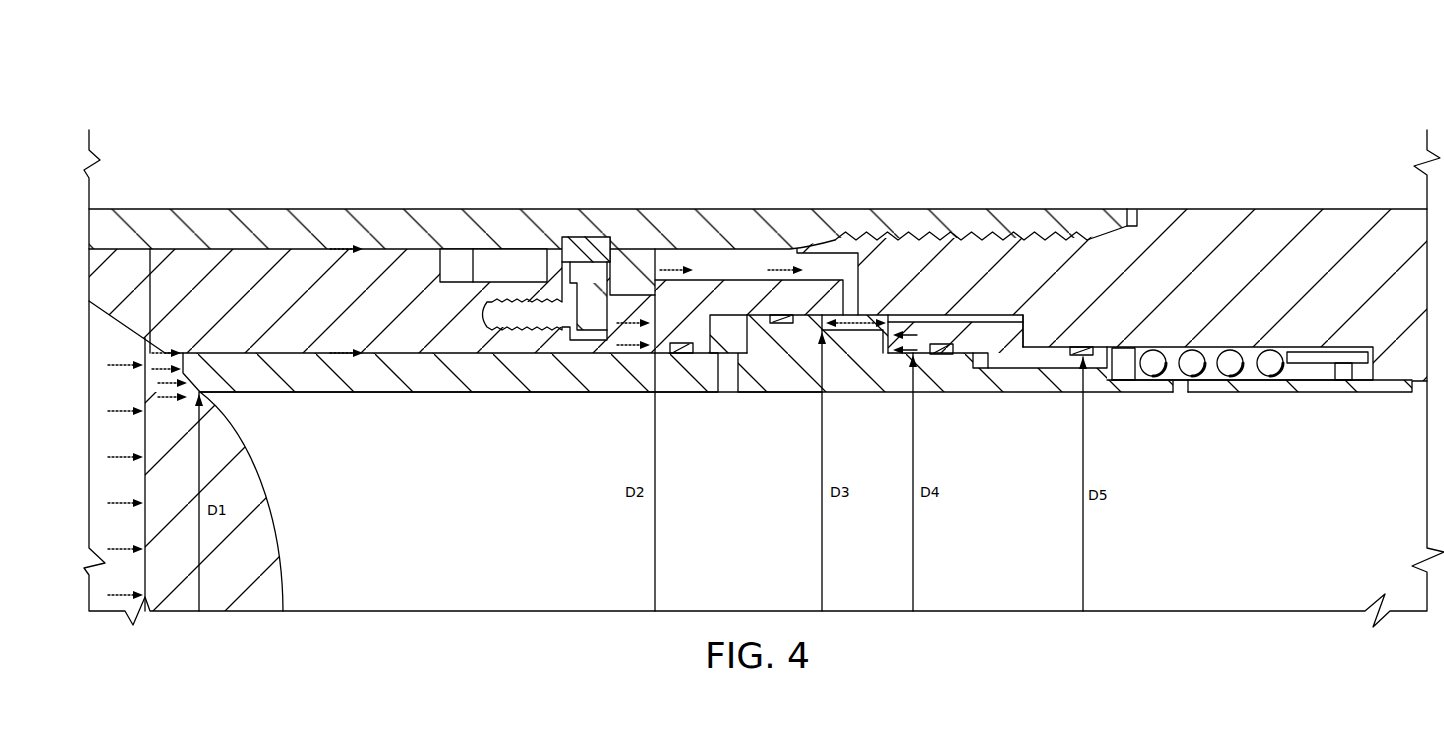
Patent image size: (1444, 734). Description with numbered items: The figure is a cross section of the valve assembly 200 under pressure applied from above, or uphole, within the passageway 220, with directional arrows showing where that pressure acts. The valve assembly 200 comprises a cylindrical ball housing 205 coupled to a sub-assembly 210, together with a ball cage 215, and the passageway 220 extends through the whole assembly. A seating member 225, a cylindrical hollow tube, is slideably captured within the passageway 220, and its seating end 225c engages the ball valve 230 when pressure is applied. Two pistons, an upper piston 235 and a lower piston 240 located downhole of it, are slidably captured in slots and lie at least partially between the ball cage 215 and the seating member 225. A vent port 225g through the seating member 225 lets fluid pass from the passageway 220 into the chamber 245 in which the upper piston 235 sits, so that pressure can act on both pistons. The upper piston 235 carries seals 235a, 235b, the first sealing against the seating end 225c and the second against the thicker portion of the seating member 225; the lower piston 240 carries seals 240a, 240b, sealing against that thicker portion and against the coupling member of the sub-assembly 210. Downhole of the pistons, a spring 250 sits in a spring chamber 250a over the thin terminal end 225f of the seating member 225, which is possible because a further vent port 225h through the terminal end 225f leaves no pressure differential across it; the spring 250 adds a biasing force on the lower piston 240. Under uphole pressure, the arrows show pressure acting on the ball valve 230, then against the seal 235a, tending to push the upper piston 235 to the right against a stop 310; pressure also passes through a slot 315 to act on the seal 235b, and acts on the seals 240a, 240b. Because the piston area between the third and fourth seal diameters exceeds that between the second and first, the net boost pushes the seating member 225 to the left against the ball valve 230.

The valve assembly 200 is at (1072, 68).
The ball housing 205 is at (318, 218).
The sub-assembly 210 is at (1352, 208).
The ball cage 215 is at (413, 262).
The passageway 220 is at (782, 571).
The seating member 225 is at (403, 396).
The seating end 225c is at (261, 327).
The terminal end 225f is at (1294, 404).
The vent port 225g is at (690, 356).
The vent port 225h is at (1207, 394).
The ball valve 230 is at (262, 532).
The upper piston 235 is at (745, 312).
The seal 235a is at (660, 366).
The seal 235b is at (780, 314).
The lower piston 240 is at (1000, 320).
The seal 240a is at (935, 343).
The seal 240b is at (1063, 347).
The chamber 245 is at (748, 343).
The spring 250 is at (1270, 350).
The spring chamber 250a is at (1177, 325).
The stop 310 is at (695, 292).
The slot 315 is at (845, 335).